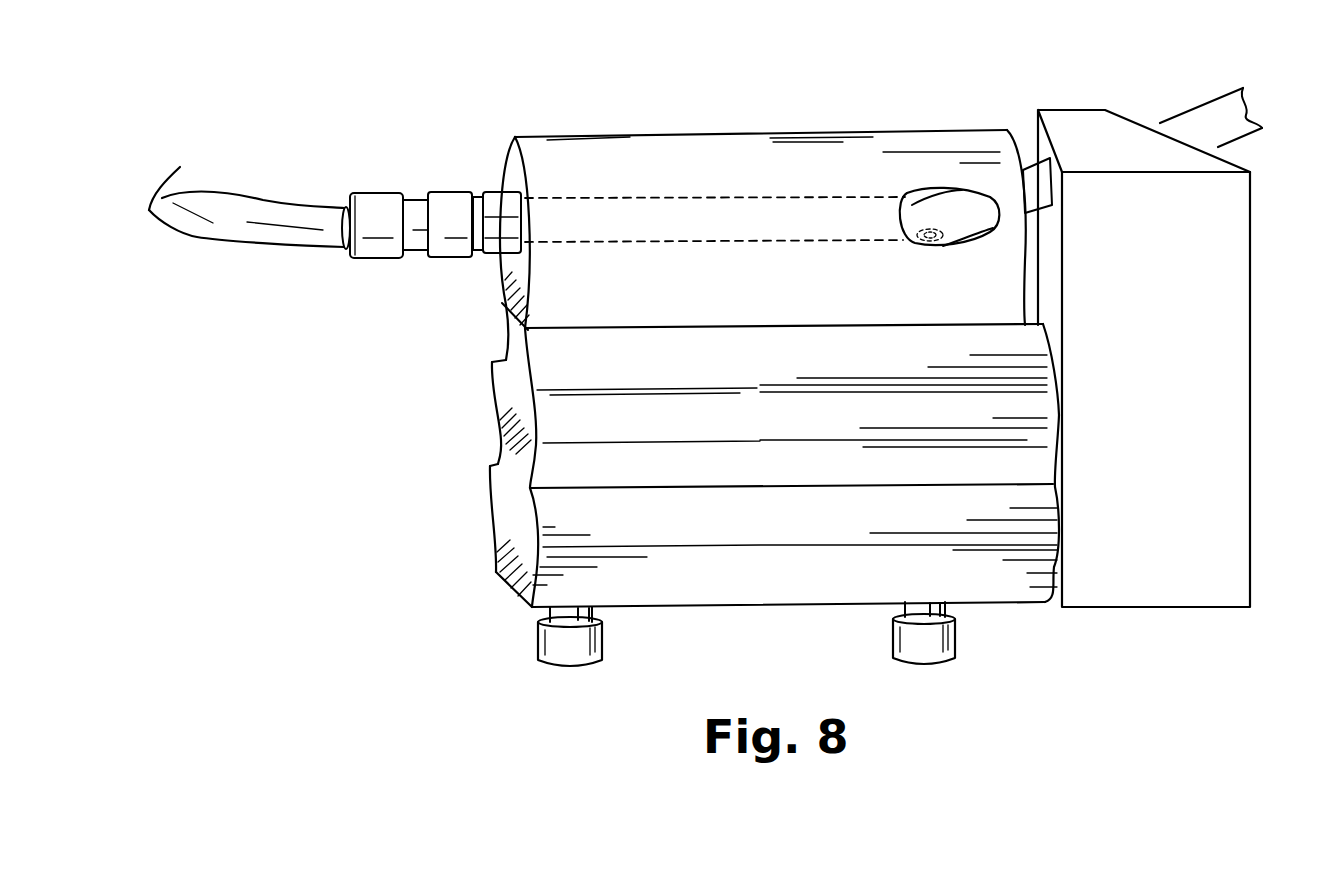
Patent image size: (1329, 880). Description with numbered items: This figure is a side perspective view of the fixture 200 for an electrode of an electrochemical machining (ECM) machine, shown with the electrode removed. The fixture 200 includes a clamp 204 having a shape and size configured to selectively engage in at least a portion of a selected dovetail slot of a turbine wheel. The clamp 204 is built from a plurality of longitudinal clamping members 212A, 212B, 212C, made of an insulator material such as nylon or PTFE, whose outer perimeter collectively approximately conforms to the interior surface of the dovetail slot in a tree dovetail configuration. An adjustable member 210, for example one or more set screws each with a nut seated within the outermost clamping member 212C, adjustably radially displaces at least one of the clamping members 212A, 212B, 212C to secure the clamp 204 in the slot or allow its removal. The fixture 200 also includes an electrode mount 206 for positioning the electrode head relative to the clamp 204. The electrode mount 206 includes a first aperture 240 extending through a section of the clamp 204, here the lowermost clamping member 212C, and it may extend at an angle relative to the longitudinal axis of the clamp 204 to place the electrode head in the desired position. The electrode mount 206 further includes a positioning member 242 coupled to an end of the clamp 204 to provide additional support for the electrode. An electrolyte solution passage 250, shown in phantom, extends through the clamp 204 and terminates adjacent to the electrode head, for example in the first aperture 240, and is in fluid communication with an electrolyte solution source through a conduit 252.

The fixture 200 is at (538, 90).
The clamp 204 is at (458, 140).
The electrode mount 206 is at (1024, 190).
The adjustable member 210 is at (930, 640).
The longitudinal clamping member 212A is at (1003, 563).
The longitudinal clamping member 212B is at (1010, 452).
The longitudinal clamping member 212C is at (980, 277).
The first aperture 240 is at (935, 190).
The positioning member 242 is at (1217, 253).
The electrolyte solution passage 250 is at (618, 213).
The conduit 252 is at (230, 213).